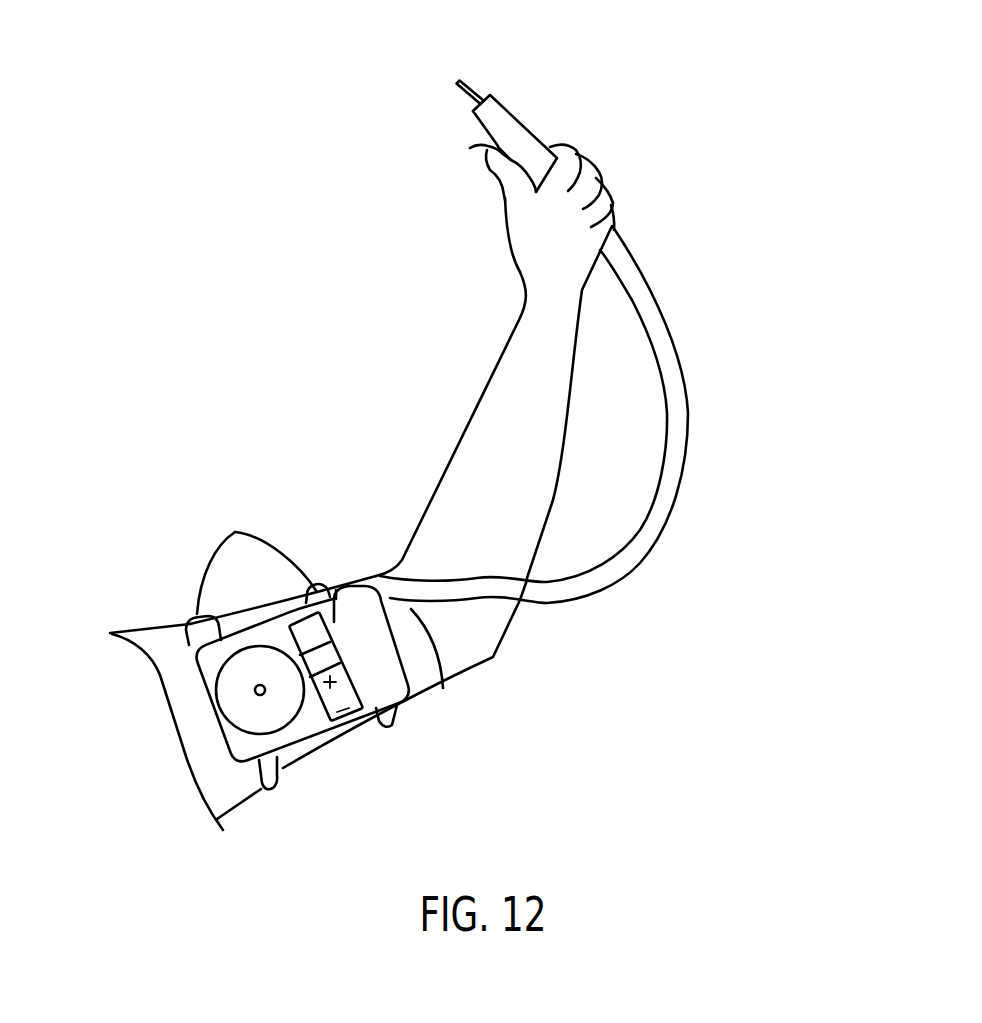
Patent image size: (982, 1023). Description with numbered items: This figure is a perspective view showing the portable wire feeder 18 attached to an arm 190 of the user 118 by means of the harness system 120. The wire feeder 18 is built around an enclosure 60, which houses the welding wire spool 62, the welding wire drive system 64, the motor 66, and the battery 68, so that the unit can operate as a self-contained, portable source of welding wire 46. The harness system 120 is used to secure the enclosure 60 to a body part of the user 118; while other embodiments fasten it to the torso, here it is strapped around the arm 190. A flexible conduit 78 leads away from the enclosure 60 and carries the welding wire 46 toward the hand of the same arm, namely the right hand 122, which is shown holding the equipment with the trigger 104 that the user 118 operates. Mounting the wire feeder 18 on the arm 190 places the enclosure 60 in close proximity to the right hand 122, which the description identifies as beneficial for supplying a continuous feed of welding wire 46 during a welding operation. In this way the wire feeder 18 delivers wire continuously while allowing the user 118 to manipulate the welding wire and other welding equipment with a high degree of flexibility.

The wire feeder 18 is at (429, 803).
The welding wire 46 is at (477, 91).
The enclosure 60 is at (401, 683).
The welding wire spool 62 is at (272, 722).
The welding wire drive system 64 is at (333, 598).
The motor 66 is at (331, 659).
The battery 68 is at (327, 707).
The flexible conduit 78 is at (690, 452).
The trigger 104 is at (489, 147).
The user 118 is at (398, 411).
The harness system 120 is at (291, 644).
The right hand 122 is at (602, 130).
The arm 190 is at (560, 657).